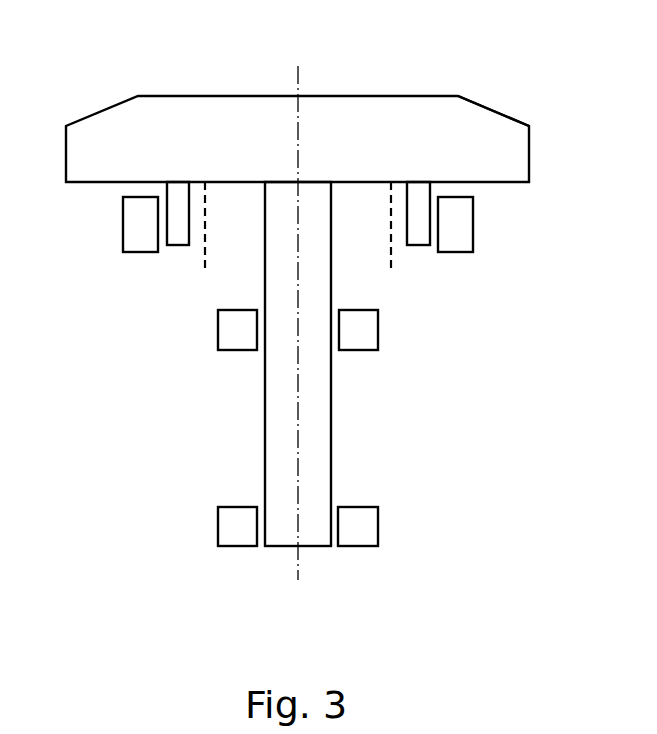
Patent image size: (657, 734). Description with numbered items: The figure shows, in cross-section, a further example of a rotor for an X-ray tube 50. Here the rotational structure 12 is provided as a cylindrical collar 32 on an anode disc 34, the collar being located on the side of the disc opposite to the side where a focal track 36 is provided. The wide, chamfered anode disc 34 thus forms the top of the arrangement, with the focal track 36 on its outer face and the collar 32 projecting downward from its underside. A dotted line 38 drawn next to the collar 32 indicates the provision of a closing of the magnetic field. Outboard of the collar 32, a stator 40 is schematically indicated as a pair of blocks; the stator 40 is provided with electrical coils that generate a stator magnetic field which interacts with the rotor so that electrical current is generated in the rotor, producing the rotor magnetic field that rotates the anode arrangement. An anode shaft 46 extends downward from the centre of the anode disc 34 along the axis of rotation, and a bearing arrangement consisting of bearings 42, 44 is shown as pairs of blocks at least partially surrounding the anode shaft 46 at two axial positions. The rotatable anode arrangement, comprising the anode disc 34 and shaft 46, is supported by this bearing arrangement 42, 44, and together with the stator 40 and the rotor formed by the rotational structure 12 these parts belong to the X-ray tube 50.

The X-ray tube 50 is at (288, 95).
The anode disc 34 is at (418, 118).
The focal track 36 is at (491, 108).
The rotational structure 12 is at (329, 345).
The anode shaft 46 is at (283, 410).
The cylindrical collar 32 is at (417, 233).
The dotted line 38 is at (205, 255).
The stator 40 is at (463, 223).
The bearing 42 is at (360, 330).
The bearing 44 is at (360, 527).